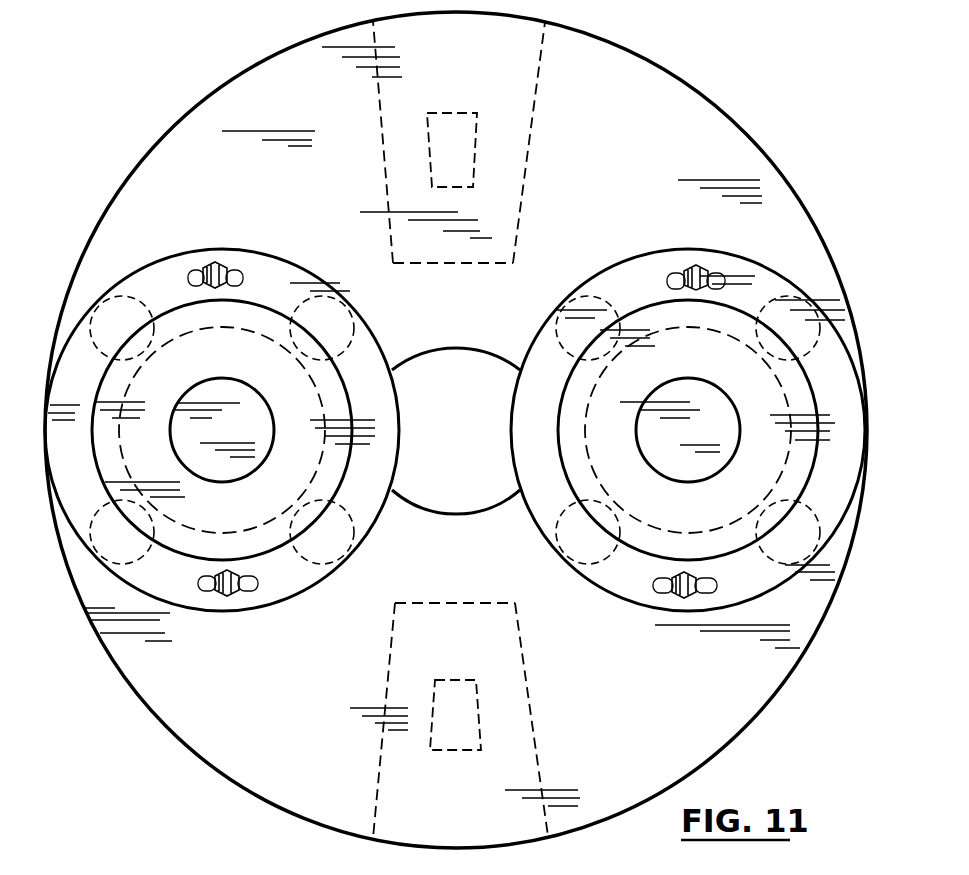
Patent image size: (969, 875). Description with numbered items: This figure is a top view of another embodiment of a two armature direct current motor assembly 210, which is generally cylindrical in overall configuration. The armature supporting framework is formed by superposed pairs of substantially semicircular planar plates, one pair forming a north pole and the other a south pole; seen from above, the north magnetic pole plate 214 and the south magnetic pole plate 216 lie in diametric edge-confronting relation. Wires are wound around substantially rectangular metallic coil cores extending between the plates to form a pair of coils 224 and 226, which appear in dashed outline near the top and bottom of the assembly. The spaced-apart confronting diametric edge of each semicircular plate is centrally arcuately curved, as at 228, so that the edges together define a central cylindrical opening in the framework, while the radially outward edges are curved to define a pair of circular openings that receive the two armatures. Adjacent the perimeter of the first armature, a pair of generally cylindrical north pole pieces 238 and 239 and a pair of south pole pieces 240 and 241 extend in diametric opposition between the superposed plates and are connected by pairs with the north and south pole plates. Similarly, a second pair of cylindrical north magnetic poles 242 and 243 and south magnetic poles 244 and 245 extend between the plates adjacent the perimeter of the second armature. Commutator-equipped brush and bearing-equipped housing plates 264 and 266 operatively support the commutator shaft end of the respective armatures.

The two armature direct current motor assembly 210 is at (732, 87).
The north magnetic pole plate 214 is at (310, 116).
The south magnetic pole plate 216 is at (305, 696).
The coil 224 is at (532, 708).
The coil 226 is at (533, 134).
The central arcuate curve 228 is at (455, 352).
The north pole piece 238 is at (588, 296).
The north pole piece 239 is at (772, 578).
The south pole piece 240 is at (572, 563).
The south pole piece 241 is at (772, 296).
The north magnetic pole 242 is at (98, 298).
The north magnetic pole 243 is at (306, 588).
The south magnetic pole 244 is at (100, 568).
The south magnetic pole 245 is at (333, 297).
The housing plate 264 is at (606, 600).
The housing plate 266 is at (228, 614).